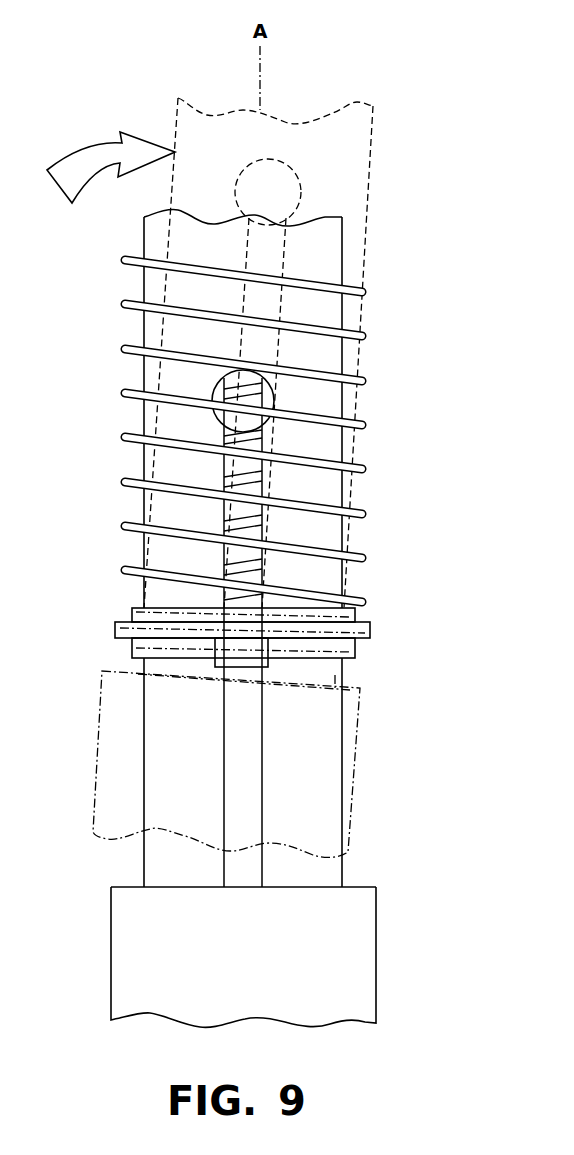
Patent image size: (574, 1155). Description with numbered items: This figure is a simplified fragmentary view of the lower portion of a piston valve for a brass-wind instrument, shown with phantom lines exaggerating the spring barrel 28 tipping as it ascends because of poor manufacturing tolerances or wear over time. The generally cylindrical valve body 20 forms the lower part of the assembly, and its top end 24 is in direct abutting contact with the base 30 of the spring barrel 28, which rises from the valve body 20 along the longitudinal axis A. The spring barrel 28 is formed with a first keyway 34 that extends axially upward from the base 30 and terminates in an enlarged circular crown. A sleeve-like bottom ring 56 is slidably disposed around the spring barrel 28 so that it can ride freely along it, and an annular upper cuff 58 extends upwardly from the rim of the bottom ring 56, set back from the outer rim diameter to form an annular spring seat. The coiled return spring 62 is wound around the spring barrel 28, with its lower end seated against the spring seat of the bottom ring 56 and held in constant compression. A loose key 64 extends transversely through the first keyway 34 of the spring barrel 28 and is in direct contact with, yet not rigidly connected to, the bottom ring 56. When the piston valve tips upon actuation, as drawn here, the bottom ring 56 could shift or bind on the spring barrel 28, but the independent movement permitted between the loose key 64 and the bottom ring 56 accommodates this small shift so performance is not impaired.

The valve body 20 is at (256, 969).
The top end 24 is at (377, 889).
The spring barrel 28 is at (349, 253).
The base 30 is at (144, 872).
The first keyway 34 is at (226, 463).
The bottom ring 56 is at (111, 620).
The upper cuff 58 is at (356, 617).
The return spring 62 is at (372, 423).
The loose key 64 is at (206, 649).